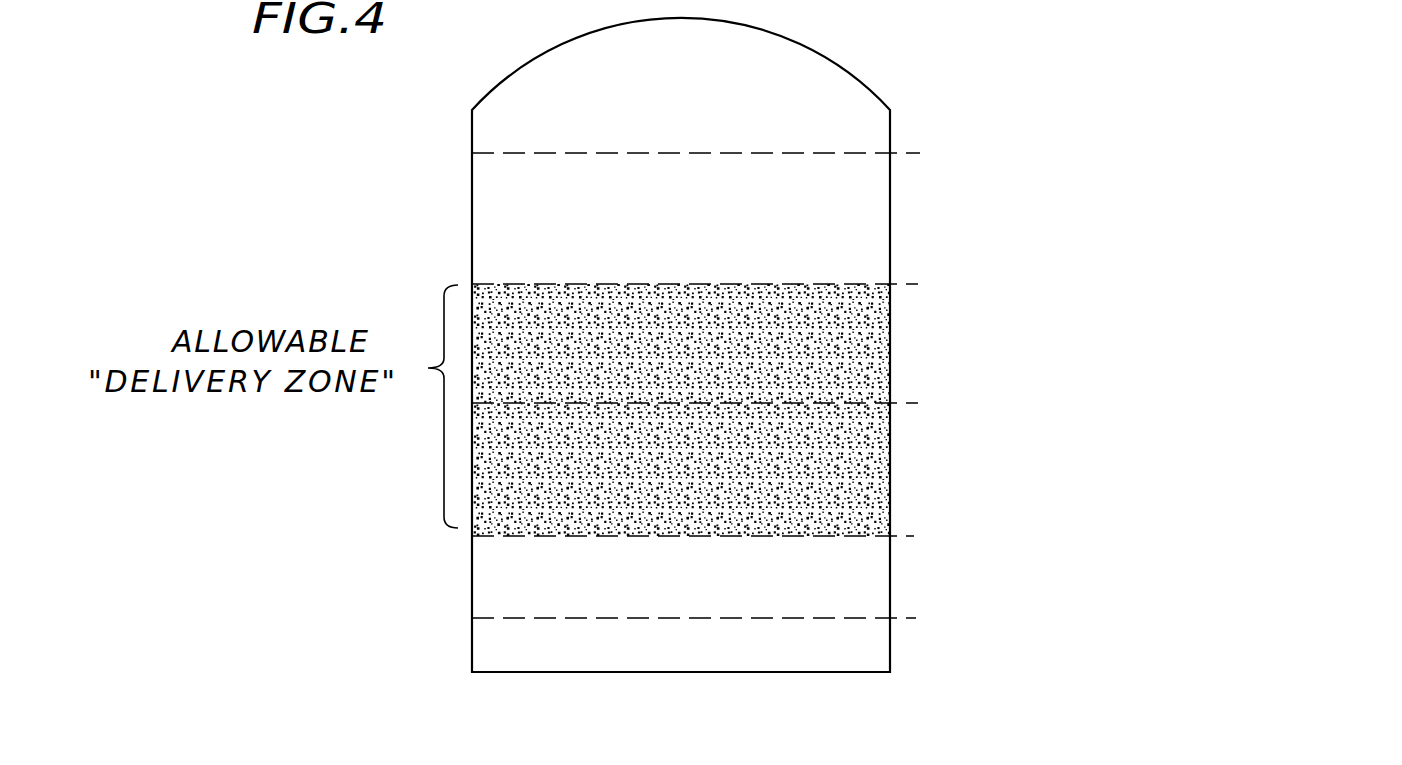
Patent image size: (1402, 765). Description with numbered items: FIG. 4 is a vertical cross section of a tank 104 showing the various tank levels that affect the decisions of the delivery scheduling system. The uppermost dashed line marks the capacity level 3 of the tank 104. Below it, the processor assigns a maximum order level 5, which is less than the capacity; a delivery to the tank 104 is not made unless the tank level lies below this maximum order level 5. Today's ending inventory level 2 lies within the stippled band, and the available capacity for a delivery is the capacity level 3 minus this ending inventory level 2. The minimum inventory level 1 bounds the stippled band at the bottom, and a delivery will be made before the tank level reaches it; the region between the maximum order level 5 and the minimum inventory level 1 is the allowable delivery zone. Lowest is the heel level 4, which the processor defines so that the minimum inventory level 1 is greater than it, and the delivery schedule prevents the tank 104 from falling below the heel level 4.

The tank 104 is at (892, 129).
The capacity level 3 is at (864, 159).
The maximum order level 5 is at (929, 292).
The ending inventory level 2 is at (900, 403).
The minimum inventory level 1 is at (904, 537).
The heel level 4 is at (840, 625).